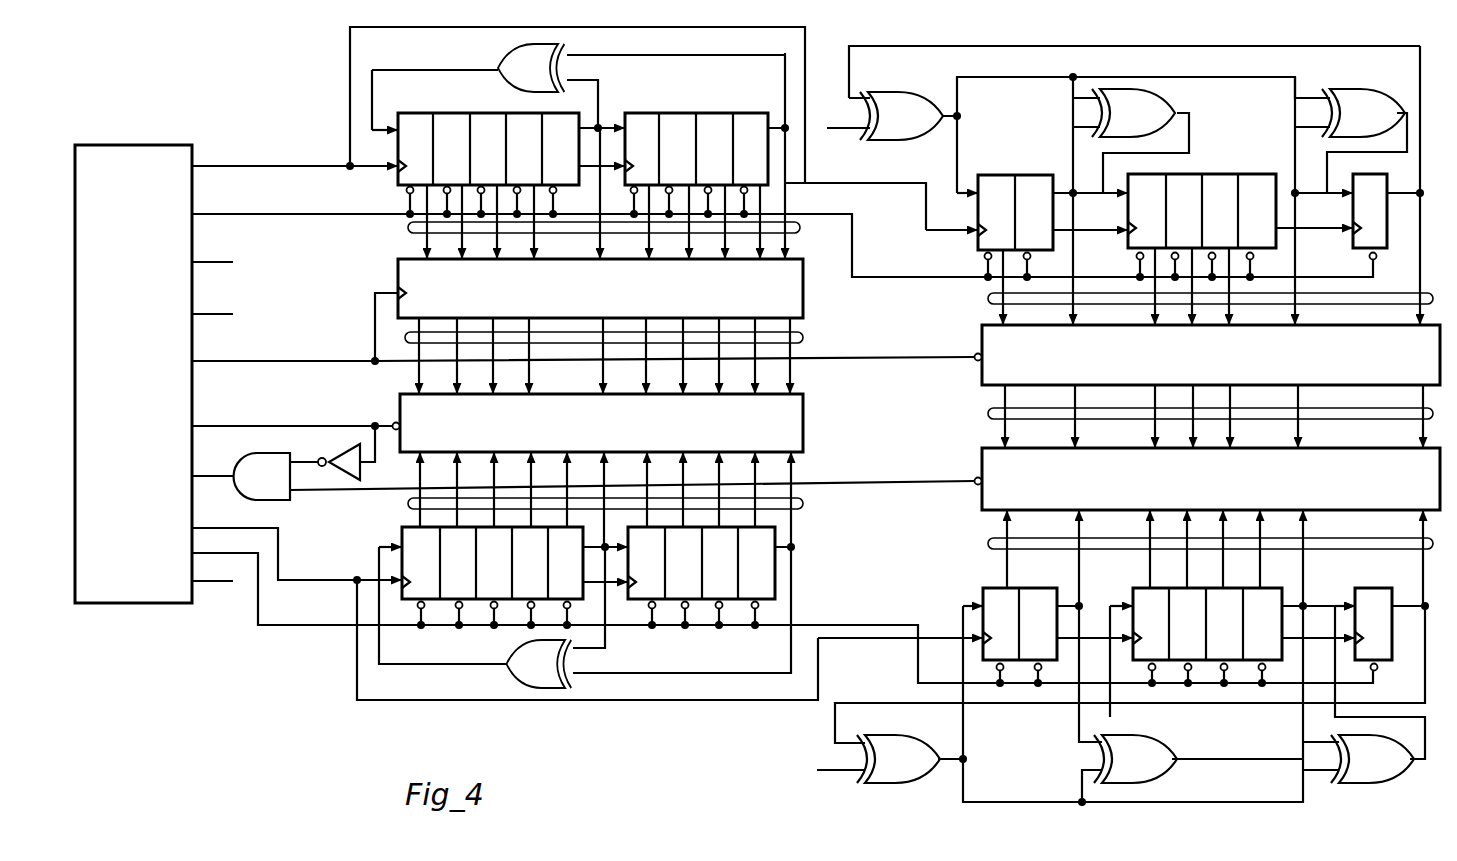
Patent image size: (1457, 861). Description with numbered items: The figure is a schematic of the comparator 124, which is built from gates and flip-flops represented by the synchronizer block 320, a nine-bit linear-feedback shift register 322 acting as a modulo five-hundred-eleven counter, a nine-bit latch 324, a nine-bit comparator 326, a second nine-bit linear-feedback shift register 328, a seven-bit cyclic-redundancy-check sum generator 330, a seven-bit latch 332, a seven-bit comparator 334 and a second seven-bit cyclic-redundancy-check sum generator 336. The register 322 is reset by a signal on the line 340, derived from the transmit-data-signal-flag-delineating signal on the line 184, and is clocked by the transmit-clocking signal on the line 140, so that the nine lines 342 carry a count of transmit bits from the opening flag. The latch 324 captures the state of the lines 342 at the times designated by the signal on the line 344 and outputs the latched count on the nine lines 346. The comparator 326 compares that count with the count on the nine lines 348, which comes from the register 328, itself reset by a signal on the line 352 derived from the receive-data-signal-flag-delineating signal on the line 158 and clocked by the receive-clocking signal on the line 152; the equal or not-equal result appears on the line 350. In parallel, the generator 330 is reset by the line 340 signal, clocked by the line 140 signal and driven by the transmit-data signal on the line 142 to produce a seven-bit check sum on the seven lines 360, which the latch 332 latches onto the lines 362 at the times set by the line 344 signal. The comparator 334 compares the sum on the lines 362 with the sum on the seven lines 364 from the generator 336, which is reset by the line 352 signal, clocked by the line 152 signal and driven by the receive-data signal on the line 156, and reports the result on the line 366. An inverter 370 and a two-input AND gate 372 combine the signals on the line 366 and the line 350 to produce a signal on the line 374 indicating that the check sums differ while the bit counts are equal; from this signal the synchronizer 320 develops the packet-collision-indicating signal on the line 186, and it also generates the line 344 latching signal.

The comparator 124 is at (697, 706).
The transmit-clocking signal line 140 is at (212, 169).
The transmit-data signal line 142 is at (830, 128).
The receive-clocking signal line 152 is at (288, 583).
The receive-data signal line 156 is at (819, 770).
The receive-data-signal-flag-delineating signal line 158 is at (226, 583).
The transmit-data-signal-flag-delineating signal line 184 is at (212, 265).
The packet-collision-indicating signal line 186 is at (212, 317).
The synchronizer 320 is at (130, 604).
The 9-bit linear-feedback shift register 322 is at (385, 187).
The 9-bit latch 324 is at (397, 260).
The 9-bit comparator 326 is at (400, 395).
The 9-bit linear-feedback shift register 328 is at (391, 523).
The 7-bit cyclic-redundancy-check sum generator 330 is at (962, 246).
The 7-bit latch 332 is at (978, 338).
The 7-bit comparator 334 is at (982, 460).
The 7-bit cyclic-redundancy-check sum generator 336 is at (970, 591).
The reset signal line 340 is at (282, 217).
The count signal lines 342 is at (800, 228).
The latching signal line 344 is at (290, 360).
The latched count signal lines 346 is at (803, 337).
The receive count signal lines 348 is at (803, 503).
The count comparison result line 350 is at (250, 426).
The reset signal line 352 is at (275, 628).
The CRC sum signal lines 360 is at (988, 298).
The latched CRC sum signal lines 362 is at (988, 413).
The receive CRC sum signal lines 364 is at (988, 543).
The sum comparison result line 366 is at (885, 484).
The inverter 370 is at (341, 455).
The 2-input AND gate 372 is at (278, 488).
The collision detection signal line 374 is at (219, 478).